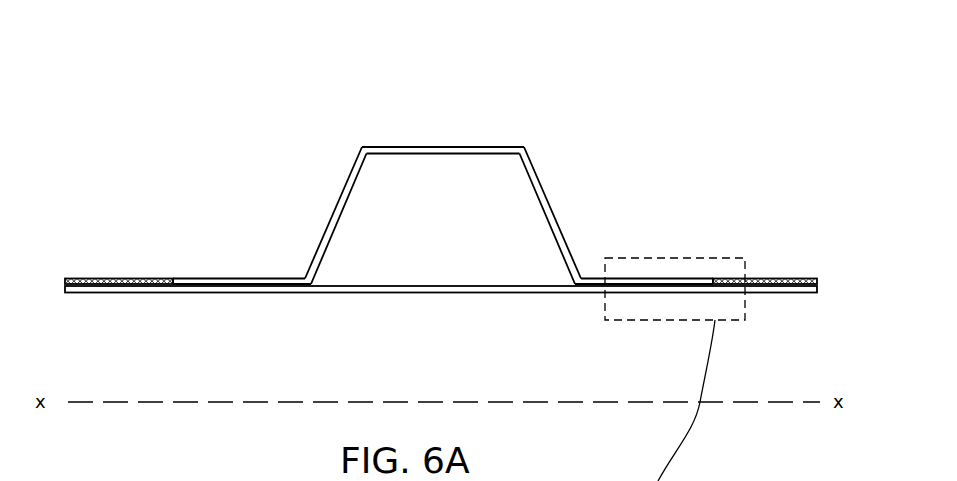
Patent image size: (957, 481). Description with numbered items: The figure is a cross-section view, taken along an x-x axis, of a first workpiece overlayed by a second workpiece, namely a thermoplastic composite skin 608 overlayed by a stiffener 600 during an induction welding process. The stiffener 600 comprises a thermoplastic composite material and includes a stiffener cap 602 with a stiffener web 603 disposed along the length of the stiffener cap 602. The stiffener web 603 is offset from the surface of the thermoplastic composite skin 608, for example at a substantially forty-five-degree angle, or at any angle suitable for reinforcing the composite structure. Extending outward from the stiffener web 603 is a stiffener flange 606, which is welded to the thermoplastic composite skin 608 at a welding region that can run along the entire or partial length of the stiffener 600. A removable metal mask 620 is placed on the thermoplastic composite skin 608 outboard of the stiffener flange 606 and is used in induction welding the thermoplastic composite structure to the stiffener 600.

The stiffener 600 is at (459, 251).
The stiffener cap 602 is at (437, 146).
The stiffener web 603 is at (535, 171).
The stiffener flange 606 is at (203, 278).
The thermoplastic composite skin 608 is at (267, 293).
The removable metal mask 620 is at (130, 278).